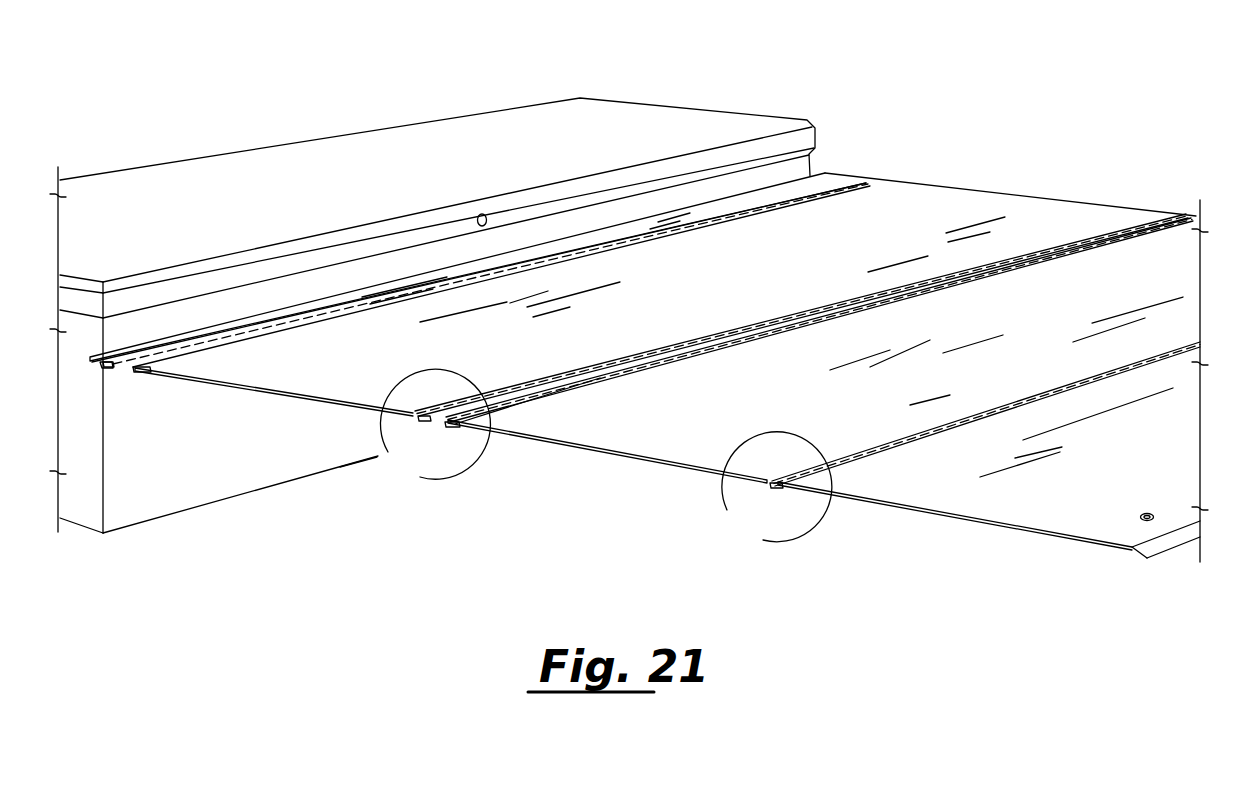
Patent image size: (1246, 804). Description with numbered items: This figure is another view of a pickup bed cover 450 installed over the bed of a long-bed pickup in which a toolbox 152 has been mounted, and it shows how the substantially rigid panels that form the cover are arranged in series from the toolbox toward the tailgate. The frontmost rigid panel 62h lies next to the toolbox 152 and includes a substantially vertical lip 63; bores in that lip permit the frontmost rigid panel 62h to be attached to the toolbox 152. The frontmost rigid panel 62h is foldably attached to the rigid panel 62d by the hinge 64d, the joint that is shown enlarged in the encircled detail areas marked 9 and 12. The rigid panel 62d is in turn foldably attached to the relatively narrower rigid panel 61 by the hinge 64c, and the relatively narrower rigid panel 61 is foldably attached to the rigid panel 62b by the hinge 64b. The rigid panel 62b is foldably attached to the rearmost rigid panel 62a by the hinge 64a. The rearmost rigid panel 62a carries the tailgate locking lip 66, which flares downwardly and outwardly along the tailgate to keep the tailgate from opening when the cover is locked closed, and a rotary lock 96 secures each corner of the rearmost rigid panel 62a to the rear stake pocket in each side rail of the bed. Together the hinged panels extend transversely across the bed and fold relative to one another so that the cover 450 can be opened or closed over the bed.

The toolbox 152 is at (728, 106).
The pickup bed cover 450 is at (990, 170).
The frontmost rigid panel 62h is at (190, 336).
The rigid panel 62d is at (296, 398).
The rigid panel 62b is at (612, 452).
The rearmost rigid panel 62a is at (962, 519).
The hinge 64d is at (150, 350).
The hinge 64c is at (683, 343).
The hinge 64b is at (687, 356).
The hinge 64a is at (958, 415).
The substantially vertical lip 63 is at (108, 372).
The relatively narrower rigid panel 61 is at (600, 378).
The tailgate locking lip 66 is at (1170, 545).
The rotary lock 96 is at (1147, 512).
The detail circle (FIG. 9) 9 is at (415, 428).
The detail circle (FIG. 12) 12 is at (776, 493).